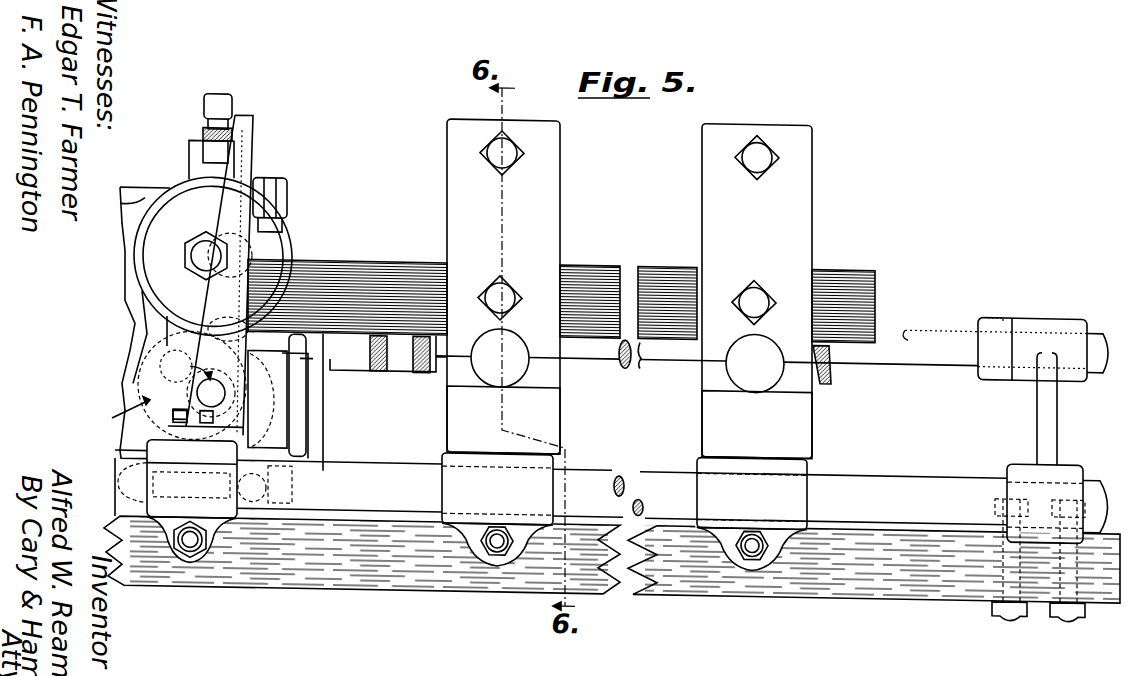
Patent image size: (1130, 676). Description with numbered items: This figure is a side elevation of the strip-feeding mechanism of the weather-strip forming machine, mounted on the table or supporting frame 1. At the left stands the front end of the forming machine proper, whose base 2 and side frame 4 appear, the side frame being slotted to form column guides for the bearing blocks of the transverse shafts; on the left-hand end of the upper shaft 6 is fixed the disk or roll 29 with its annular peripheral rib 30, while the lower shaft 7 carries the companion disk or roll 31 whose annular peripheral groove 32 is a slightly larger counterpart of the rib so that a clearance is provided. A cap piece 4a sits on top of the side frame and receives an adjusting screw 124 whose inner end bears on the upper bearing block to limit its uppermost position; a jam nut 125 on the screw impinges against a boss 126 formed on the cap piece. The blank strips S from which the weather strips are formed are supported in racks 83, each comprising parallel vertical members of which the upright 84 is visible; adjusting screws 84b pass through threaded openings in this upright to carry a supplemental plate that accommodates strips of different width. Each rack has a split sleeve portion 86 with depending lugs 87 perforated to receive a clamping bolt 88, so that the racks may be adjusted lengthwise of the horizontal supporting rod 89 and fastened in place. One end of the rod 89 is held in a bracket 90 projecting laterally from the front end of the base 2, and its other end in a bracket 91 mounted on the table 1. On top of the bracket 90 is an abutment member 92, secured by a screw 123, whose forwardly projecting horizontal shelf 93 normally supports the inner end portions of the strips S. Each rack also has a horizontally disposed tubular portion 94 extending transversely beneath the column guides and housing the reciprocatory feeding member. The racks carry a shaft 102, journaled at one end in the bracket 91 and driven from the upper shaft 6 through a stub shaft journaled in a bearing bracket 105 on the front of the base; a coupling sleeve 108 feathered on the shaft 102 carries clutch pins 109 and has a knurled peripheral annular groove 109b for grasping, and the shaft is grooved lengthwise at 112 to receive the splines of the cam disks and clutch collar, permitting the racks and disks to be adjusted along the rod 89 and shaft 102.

The table or supporting frame 1 is at (420, 579).
The base 2 is at (125, 464).
The side frame 4 is at (137, 324).
The cap piece 4a is at (137, 196).
The upper shaft 6 is at (206, 259).
The lower shaft 7 is at (192, 385).
The disk or roll 29 is at (157, 269).
The annular peripheral rib 30 is at (157, 297).
The companion disk or roll 31 is at (155, 392).
The annular peripheral groove 32 is at (105, 416).
The rack 83 is at (547, 420).
The vertical member 84 is at (548, 222).
The adjusting screws 84b is at (512, 160).
The split sleeve portion 86 is at (567, 457).
The depending lugs 87 is at (480, 556).
The clamping bolts 88 is at (499, 547).
The horizontal supporting rod 89 is at (368, 473).
The bracket 90 is at (213, 512).
The bracket 91 is at (1043, 419).
The abutment member 92 is at (245, 232).
The horizontal shelf 93 is at (282, 346).
The tubular portion 94 is at (530, 370).
The shaft 102 is at (654, 352).
The bearing bracket 105 is at (313, 424).
The coupling sleeve or collar 108 is at (434, 380).
The clutch pins 109 is at (368, 352).
The peripheral annular groove 109b is at (405, 362).
The lengthwise groove 112 is at (908, 330).
The screw 123 is at (167, 427).
The adjusting screws 124 is at (210, 130).
The jam nuts 125 is at (212, 153).
The bosses 126 is at (221, 176).
The blank strips S is at (362, 277).